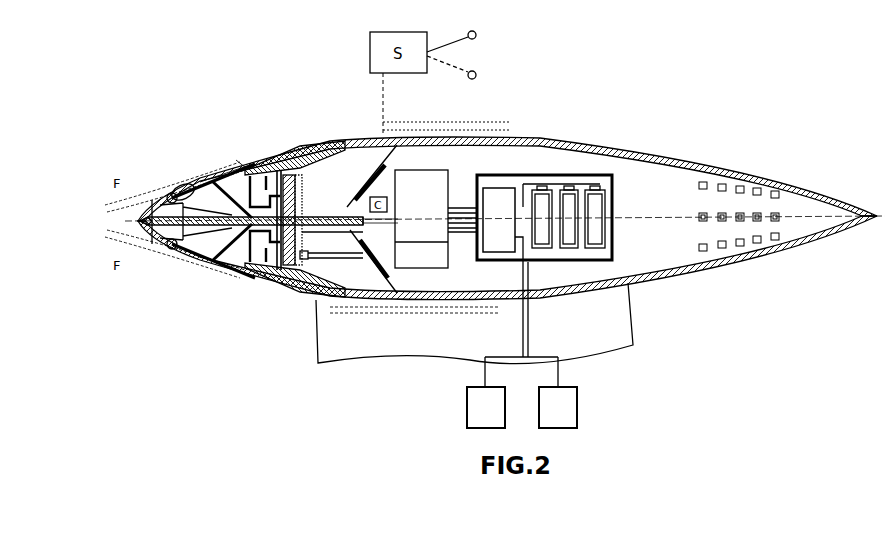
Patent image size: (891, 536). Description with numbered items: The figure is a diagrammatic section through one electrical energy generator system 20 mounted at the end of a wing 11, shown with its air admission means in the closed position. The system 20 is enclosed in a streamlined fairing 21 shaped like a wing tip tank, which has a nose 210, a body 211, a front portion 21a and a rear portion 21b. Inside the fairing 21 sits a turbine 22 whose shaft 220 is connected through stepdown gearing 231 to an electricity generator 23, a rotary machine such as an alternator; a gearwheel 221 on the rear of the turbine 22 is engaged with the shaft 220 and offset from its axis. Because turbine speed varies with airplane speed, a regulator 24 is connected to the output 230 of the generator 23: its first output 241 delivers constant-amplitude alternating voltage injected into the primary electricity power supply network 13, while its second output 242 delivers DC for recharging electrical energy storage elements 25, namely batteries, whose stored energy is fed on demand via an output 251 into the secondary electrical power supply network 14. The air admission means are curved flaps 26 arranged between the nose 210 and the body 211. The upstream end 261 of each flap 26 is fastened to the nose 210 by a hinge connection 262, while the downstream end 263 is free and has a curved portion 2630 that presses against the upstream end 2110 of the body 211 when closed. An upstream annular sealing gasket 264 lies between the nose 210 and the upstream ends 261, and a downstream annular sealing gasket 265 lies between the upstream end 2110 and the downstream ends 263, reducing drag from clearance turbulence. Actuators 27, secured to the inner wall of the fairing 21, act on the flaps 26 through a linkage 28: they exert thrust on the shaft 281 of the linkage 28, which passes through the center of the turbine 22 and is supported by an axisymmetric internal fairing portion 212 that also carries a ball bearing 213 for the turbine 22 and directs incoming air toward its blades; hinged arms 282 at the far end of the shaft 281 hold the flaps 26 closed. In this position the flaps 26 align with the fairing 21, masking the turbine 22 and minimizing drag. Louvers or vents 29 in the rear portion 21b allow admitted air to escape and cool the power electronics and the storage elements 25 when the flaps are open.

The electrical energy generator system 20 is at (286, 72).
The streamlined fairing 21 is at (509, 136).
The body of the fairing 211 is at (434, 104).
The front portion of the fairing 21a is at (150, 268).
The rear portion of the fairing 21b is at (770, 278).
The nose 210 is at (138, 221).
The linkage 28 is at (322, 155).
The internal portion of the fairing 212 is at (290, 155).
The upstream end of the body 2110 is at (268, 165).
The ball bearing 213 is at (300, 215).
The curved portion of the downstream end 2630 is at (253, 219).
The flap 26 is at (208, 177).
The hinged arms 282 is at (228, 208).
The hinge connection 262 is at (212, 240).
The upstream end of the flap 261 is at (172, 190).
The upstream annular sealing gasket 264 is at (160, 192).
The downstream end of the flap 263 is at (240, 168).
The downstream annular sealing gasket 265 is at (240, 163).
The shaft of the linkage 281 is at (350, 208).
The actuator 27 is at (372, 174).
The gearwheel 221 is at (302, 236).
The turbine 22 is at (308, 259).
The shaft of the turbine 220 is at (375, 262).
The electricity generator 23 is at (420, 172).
The stepdown gearing 231 is at (433, 258).
The output of the electricity generator 230 is at (462, 208).
The regulator 24 is at (497, 180).
The first output of the regulator 241 is at (500, 258).
The second output of the regulator 242 is at (524, 185).
The electrical energy storage elements 25 is at (547, 210).
The output of the storage element 251 is at (522, 320).
The wing 11 is at (622, 316).
The primary electricity power supply network 13 is at (467, 407).
The secondary electrical power supply network 14 is at (577, 407).
The louvers or vents 29 is at (758, 212).